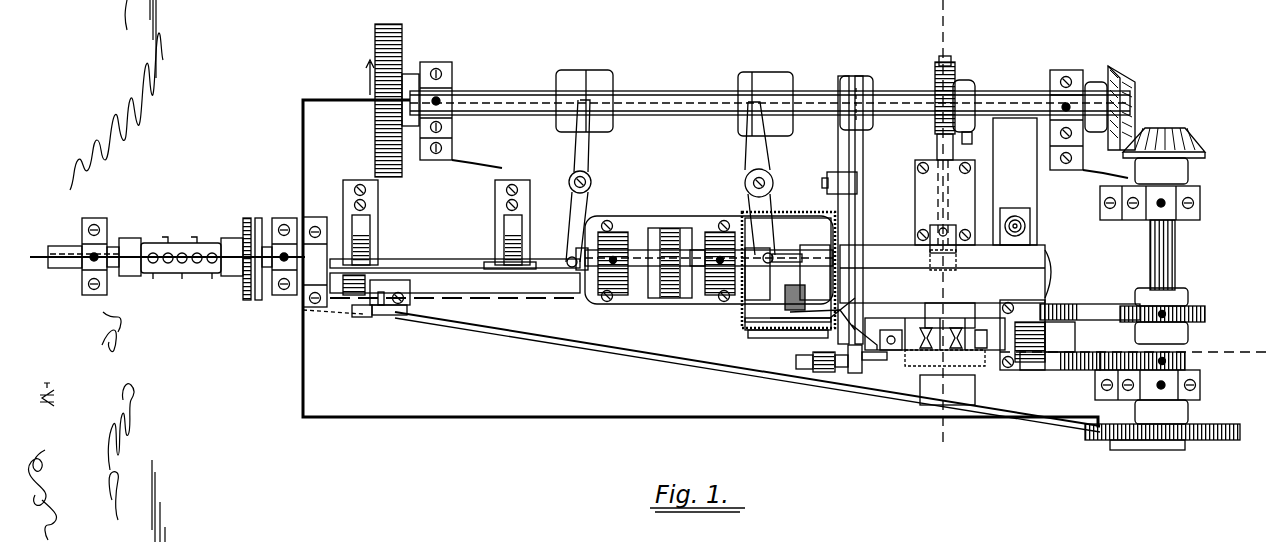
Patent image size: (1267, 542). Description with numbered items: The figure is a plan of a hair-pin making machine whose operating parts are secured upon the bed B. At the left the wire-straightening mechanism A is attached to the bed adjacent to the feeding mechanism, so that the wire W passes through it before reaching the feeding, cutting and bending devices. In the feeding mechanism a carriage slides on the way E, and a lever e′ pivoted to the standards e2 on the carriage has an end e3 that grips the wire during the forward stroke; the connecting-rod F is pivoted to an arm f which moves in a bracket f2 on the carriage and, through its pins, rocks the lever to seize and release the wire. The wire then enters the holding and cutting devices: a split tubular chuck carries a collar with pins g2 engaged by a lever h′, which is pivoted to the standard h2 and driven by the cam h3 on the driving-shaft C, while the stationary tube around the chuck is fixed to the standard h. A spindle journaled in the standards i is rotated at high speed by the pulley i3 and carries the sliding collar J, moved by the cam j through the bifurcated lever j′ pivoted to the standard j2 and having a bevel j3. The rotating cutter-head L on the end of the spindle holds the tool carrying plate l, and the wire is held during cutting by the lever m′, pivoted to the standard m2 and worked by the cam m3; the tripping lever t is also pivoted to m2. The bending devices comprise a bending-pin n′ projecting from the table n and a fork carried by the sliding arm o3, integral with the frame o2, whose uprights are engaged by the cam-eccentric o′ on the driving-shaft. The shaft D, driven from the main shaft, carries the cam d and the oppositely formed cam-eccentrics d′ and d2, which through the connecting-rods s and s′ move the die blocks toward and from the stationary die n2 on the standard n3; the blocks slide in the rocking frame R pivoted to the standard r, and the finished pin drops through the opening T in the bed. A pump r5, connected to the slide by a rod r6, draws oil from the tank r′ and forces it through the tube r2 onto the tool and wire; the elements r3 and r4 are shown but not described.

The wire-straightening mechanism A is at (167, 256).
The bed of the machine B is at (701, 266).
The driving-shaft C is at (770, 92).
The shaft D is at (1176, 258).
The way E is at (558, 288).
The connecting-rod F is at (675, 385).
The wire W is at (462, 258).
The opening T is at (955, 390).
The rocking frame R is at (1021, 384).
The cutter-head L is at (788, 270).
The sliding collar J is at (777, 280).
The lever e′ is at (382, 268).
The standards e2 is at (372, 310).
The end of the lever e3 is at (322, 262).
The arm f is at (378, 317).
The bracket f2 is at (410, 310).
The pins g2 is at (562, 253).
The standard h is at (586, 246).
The lever h′ is at (551, 225).
The standard h2 is at (592, 182).
The cam h3 is at (584, 101).
The standards i is at (620, 232).
The pulley i3 is at (668, 230).
The cam j is at (765, 104).
The bifurcated lever j′ is at (770, 212).
The standard j2 is at (774, 182).
The bevel j3 is at (775, 242).
The tool carrying plate l is at (697, 273).
The lever t is at (864, 165).
The lever m′ is at (840, 215).
The standard m2 is at (832, 183).
The cam m3 is at (856, 93).
The cam-eccentric o′ is at (965, 80).
The frame o2 is at (935, 94).
The sliding arm o3 is at (934, 147).
The table n is at (1023, 331).
The bending-pin n′ is at (945, 274).
The stationary die n2 is at (950, 315).
The standard n3 is at (991, 312).
The standard r is at (958, 338).
The tank r′ is at (852, 354).
The tube r2 is at (935, 327).
The roller r3 is at (820, 353).
The rod r4 is at (902, 329).
The pump r5 is at (750, 342).
The rod r6 is at (885, 340).
The connecting-rod s is at (1060, 352).
The connecting-rod s′ is at (1090, 305).
The cam d is at (1190, 340).
The cam-eccentric d′ is at (1190, 312).
The cam-eccentric d2 is at (1200, 368).